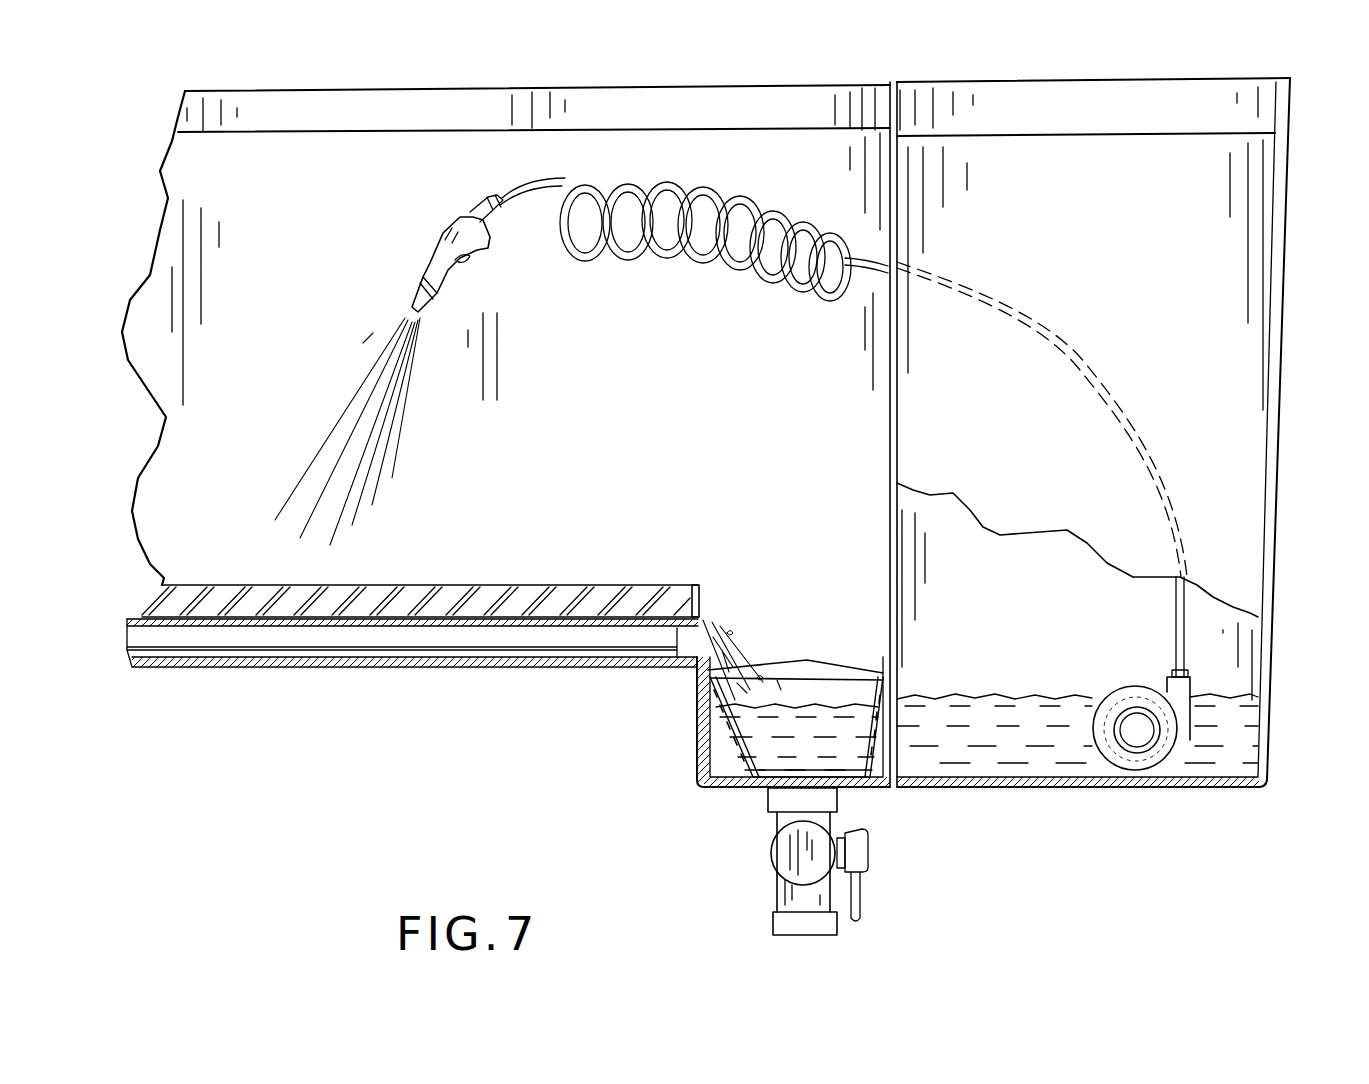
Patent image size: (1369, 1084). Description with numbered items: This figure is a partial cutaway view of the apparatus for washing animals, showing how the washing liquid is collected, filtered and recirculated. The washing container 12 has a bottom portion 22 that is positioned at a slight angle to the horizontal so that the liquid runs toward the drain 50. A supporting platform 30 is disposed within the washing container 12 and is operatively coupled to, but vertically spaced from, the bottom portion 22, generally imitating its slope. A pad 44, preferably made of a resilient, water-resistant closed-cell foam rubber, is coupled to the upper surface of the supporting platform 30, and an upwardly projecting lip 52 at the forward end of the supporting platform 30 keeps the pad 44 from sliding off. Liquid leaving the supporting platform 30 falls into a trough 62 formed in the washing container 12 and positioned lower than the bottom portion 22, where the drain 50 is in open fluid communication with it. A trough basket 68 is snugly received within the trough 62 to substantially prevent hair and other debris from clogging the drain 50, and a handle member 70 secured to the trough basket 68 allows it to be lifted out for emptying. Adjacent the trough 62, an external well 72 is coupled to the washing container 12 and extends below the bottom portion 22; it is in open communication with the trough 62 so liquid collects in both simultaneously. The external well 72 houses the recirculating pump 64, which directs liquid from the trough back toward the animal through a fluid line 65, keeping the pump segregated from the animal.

The washing container 12 is at (240, 353).
The bottom portion 22 is at (233, 667).
The supporting platform 30 is at (370, 622).
The pad 44 is at (533, 587).
The drain 50 is at (768, 800).
The upwardly projecting lip 52 is at (700, 598).
The trough 62 is at (700, 725).
The recirculating pump 64 is at (1171, 740).
The fluid line 65 is at (660, 183).
The trough basket 68 is at (748, 752).
The handle member 70 is at (832, 662).
The external well 72 is at (1228, 463).